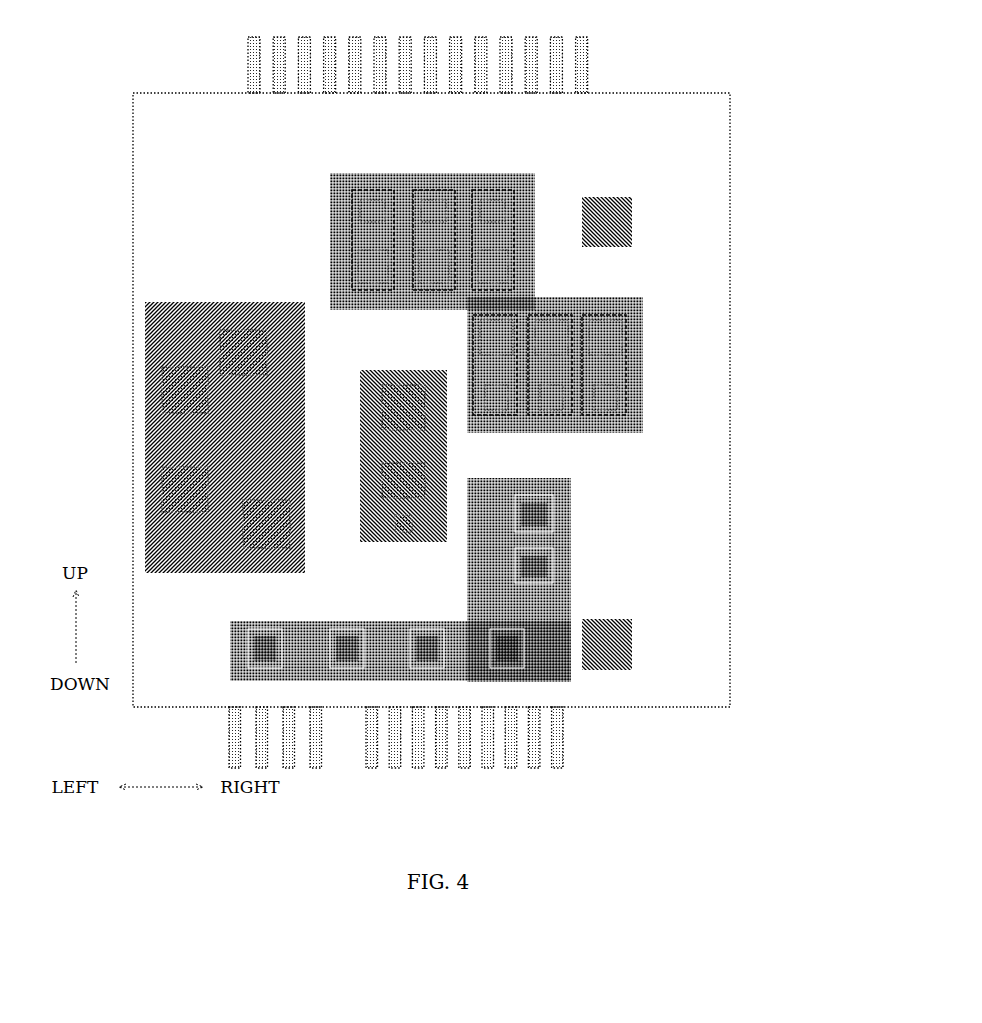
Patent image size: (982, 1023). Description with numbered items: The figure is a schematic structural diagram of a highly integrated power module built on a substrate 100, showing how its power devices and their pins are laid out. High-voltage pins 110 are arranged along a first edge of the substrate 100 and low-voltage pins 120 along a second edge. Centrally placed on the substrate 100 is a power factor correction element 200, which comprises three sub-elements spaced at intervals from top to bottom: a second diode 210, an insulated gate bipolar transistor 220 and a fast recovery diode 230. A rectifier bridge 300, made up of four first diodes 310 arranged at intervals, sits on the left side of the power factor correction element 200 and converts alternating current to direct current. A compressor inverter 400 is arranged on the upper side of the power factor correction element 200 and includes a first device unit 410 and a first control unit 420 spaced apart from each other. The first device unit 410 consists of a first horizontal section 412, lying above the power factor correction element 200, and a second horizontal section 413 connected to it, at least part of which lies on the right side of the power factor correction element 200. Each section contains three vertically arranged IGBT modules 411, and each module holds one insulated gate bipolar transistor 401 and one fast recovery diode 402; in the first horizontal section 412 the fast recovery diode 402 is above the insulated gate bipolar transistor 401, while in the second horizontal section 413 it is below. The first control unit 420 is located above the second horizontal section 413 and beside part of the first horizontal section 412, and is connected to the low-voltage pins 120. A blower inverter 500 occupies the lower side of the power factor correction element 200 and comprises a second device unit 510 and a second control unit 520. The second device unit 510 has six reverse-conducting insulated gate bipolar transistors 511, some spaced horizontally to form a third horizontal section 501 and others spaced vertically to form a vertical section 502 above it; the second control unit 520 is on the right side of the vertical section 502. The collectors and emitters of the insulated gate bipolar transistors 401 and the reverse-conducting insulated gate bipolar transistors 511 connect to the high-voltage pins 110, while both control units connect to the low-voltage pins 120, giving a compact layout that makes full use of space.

The substrate 100 is at (707, 126).
The high-voltage pins 110 is at (372, 768).
The low-voltage pins 120 is at (588, 52).
The power factor correction element 200 is at (360, 445).
The second diode 210 is at (398, 405).
The insulated gate bipolar transistor 220 is at (405, 480).
The fast recovery diode 230 is at (400, 533).
The rectifier bridge 300 is at (145, 335).
The first diodes 310 is at (180, 500).
The compressor inverter 400 is at (493, 133).
The insulated gate bipolar transistor 401 is at (643, 373).
The fast recovery diode 402 is at (610, 425).
The first device unit 410 is at (515, 172).
The IGBT modules 411 is at (365, 190).
The first horizontal section 412 is at (330, 215).
The second horizontal section 413 is at (643, 300).
The first control unit 420 is at (607, 197).
The blower inverter 500 is at (527, 818).
The third horizontal section 501 is at (502, 685).
The vertical section 502 is at (571, 490).
The second device unit 510 is at (391, 645).
The reverse-conducting insulated gate bipolar transistors 511 is at (232, 645).
The second control unit 520 is at (612, 670).